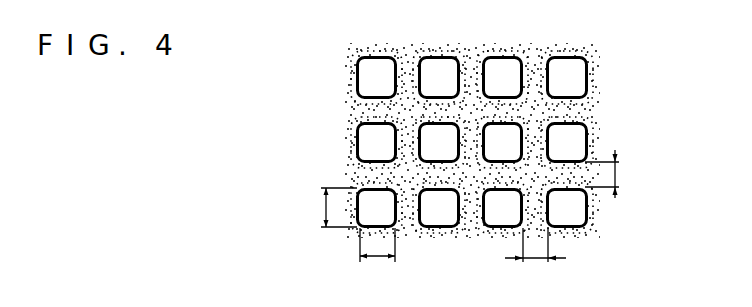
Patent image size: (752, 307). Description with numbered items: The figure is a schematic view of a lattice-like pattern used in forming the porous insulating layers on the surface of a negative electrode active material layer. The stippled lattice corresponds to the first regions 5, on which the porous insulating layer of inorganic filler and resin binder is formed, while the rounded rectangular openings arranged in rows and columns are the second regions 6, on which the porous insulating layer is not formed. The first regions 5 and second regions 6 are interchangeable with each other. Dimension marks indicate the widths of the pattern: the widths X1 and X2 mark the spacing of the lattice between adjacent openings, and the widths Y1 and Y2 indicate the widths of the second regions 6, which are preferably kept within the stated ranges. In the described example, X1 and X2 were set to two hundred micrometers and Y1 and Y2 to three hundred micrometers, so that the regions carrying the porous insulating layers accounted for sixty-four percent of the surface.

The first regions 5 is at (563, 110).
The second regions 6 is at (570, 143).
The width X1 is at (619, 174).
The width X2 is at (535, 263).
The width Y1 is at (324, 207).
The width Y2 is at (377, 261).